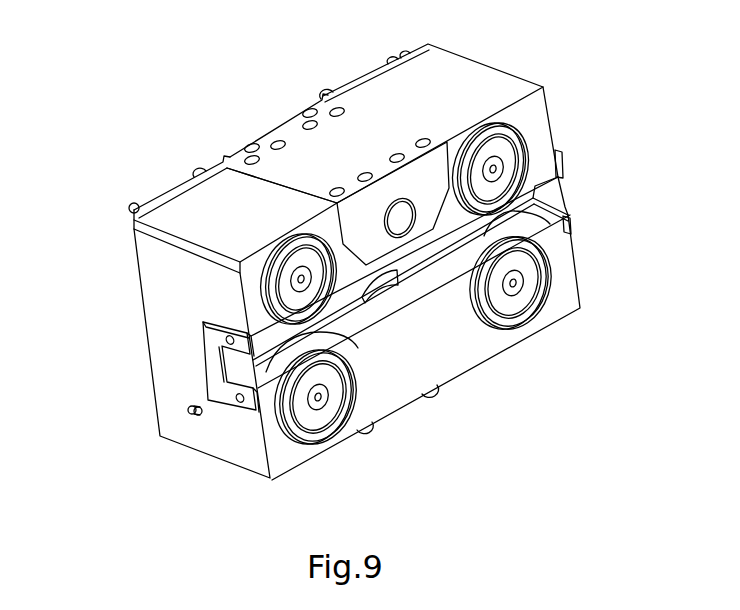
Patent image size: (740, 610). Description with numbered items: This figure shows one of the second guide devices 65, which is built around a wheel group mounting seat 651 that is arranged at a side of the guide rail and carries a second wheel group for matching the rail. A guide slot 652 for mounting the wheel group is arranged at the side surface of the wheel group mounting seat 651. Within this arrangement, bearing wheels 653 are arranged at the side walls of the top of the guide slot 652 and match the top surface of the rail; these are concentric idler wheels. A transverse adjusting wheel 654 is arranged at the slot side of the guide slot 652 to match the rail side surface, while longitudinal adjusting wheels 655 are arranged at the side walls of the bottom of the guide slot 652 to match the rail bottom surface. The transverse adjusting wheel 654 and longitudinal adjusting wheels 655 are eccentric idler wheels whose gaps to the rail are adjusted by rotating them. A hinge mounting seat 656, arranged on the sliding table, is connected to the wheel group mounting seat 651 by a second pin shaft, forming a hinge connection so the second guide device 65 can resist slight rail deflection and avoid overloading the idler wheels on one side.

The second guide device 65 is at (104, 215).
The wheel group mounting seat 651 is at (162, 338).
The guide slot 652 is at (553, 193).
The bearing wheel 653 is at (303, 272).
The transverse adjusting wheel 654 is at (395, 282).
The longitudinal adjusting wheel 655 is at (530, 273).
The hinge mounting seat 656 is at (293, 124).